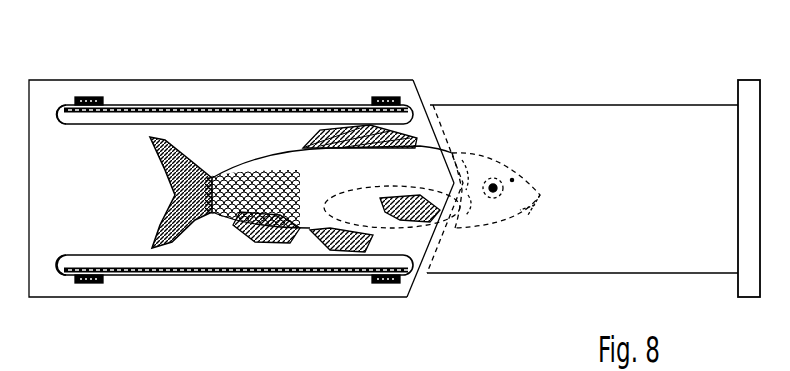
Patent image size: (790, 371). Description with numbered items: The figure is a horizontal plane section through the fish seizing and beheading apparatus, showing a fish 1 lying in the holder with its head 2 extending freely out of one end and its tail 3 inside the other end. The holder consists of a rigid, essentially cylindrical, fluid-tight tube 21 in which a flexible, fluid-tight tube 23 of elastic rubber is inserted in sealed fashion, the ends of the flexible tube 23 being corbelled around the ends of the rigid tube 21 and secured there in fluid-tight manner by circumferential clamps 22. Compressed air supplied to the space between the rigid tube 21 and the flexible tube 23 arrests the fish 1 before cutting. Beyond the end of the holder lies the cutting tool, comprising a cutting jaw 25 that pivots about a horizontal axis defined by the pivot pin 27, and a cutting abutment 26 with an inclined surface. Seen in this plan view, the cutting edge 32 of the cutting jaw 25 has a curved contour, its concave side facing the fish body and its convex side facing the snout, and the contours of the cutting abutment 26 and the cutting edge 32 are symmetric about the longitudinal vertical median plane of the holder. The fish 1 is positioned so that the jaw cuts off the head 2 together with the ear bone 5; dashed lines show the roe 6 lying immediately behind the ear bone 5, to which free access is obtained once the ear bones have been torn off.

The fish 1 is at (360, 169).
The head 2 is at (528, 180).
The tail 3 is at (190, 173).
The ear bone 5 is at (445, 180).
The roe 6 is at (330, 193).
The rigid tube 21 is at (222, 108).
The circumferential clamps 22 is at (80, 97).
The flexible tube 23 is at (88, 125).
The cutting jaw 25 is at (553, 105).
The cutting abutment 26 is at (420, 97).
The pivot pin 27 is at (748, 87).
The cutting edge 32 is at (432, 275).